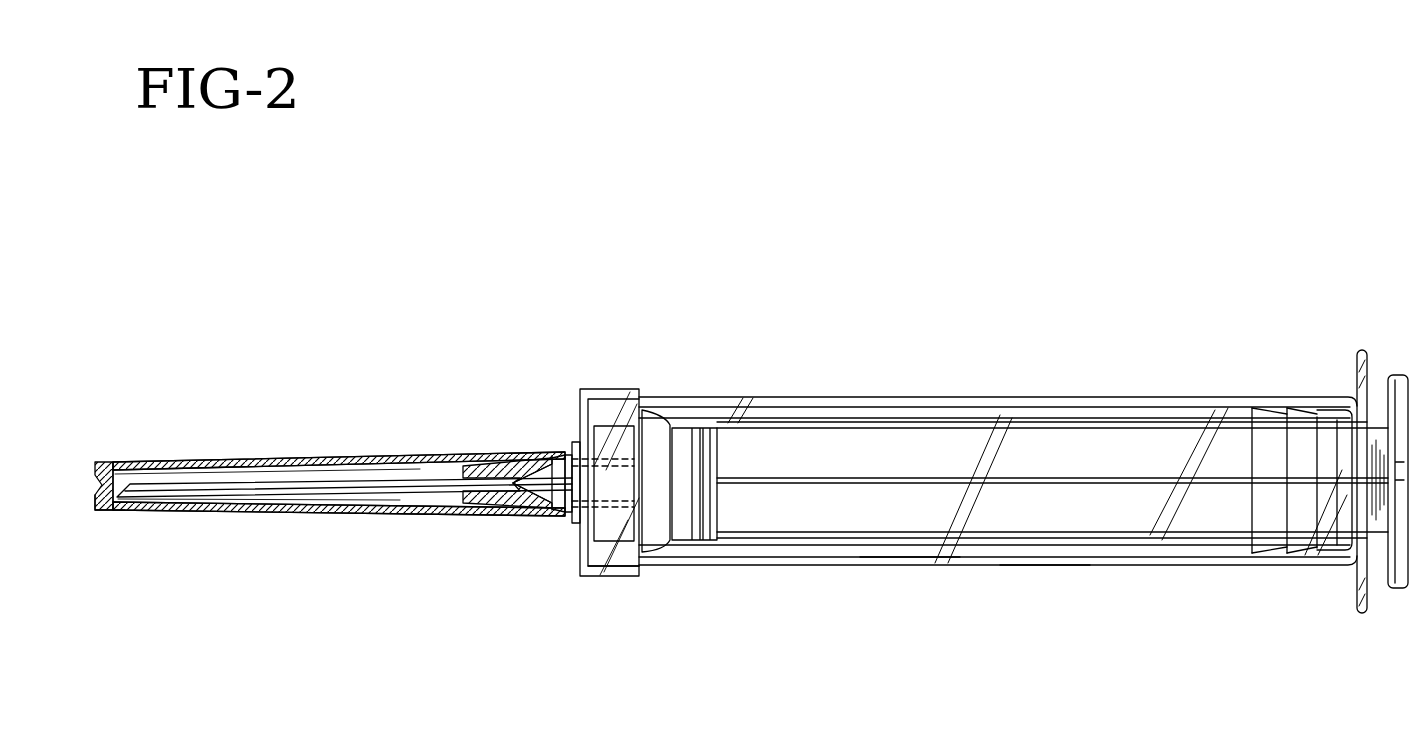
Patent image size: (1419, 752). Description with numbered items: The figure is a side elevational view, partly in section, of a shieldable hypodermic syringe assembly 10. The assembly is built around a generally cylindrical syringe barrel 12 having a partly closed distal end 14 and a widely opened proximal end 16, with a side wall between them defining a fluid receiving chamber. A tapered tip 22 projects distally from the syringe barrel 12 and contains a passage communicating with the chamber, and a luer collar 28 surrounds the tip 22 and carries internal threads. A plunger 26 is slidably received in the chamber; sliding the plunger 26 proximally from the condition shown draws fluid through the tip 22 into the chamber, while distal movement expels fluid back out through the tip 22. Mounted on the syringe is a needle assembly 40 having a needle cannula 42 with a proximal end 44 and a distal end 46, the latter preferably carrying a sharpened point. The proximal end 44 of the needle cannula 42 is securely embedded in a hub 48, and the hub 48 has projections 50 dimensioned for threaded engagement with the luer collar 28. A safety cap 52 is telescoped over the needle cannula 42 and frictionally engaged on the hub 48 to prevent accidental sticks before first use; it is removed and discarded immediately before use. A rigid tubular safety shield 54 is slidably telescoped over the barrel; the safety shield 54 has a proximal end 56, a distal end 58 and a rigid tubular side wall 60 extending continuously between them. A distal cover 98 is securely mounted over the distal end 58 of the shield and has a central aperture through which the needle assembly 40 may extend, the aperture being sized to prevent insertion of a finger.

The shieldable syringe assembly 10 is at (918, 318).
The syringe barrel 12 is at (1042, 422).
The distal end 14 is at (675, 545).
The proximal end 16 is at (1361, 348).
The tapered tip 22 is at (553, 452).
The plunger 26 is at (1150, 500).
The luer collar 28 is at (585, 575).
The needle assembly 40 is at (378, 453).
The needle cannula 42 is at (290, 492).
The proximal end 44 is at (521, 514).
The distal end 46 is at (125, 512).
The hub 48 is at (462, 494).
The projections 50 is at (605, 470).
The safety cap 52 is at (130, 462).
The safety shield 54 is at (905, 563).
The proximal end 56 is at (1350, 396).
The distal end 58 is at (580, 389).
The tubular side wall 60 is at (1040, 565).
The distal cover 98 is at (605, 490).